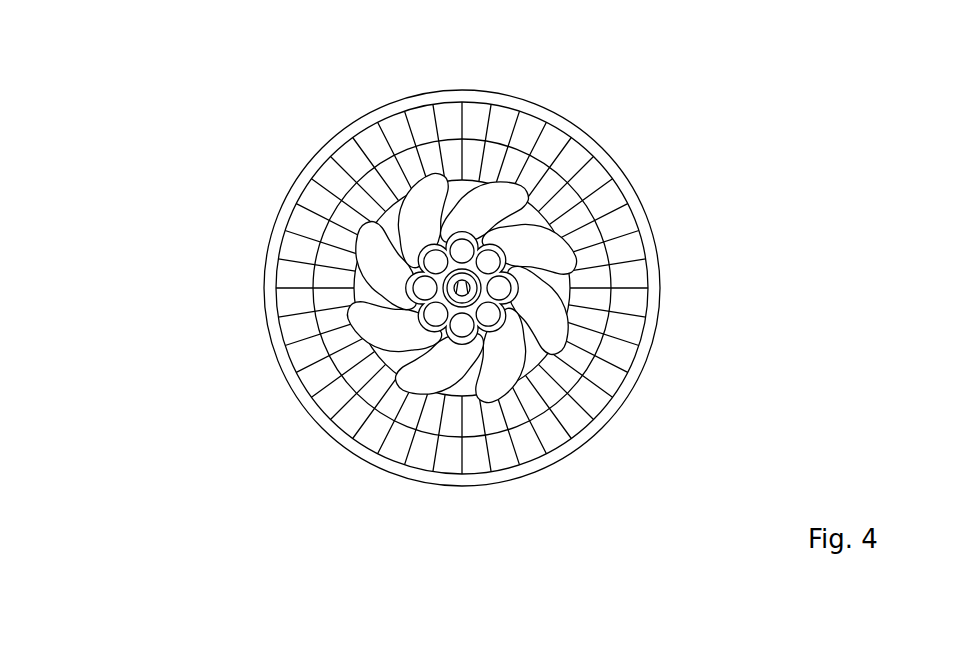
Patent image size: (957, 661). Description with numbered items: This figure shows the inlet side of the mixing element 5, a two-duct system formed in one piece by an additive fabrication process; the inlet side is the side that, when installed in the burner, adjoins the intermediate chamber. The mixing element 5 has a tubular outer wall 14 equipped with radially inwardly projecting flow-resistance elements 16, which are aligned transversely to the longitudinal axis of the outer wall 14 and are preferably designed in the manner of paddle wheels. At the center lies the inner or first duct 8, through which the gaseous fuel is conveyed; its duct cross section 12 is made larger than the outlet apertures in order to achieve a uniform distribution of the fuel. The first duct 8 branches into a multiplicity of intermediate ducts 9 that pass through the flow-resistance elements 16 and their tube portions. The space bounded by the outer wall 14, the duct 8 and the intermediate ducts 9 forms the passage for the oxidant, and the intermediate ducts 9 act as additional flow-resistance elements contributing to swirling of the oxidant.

The mixing element 5 is at (122, 92).
The tubular outer wall 14 is at (327, 151).
The duct cross section 12 is at (427, 288).
The flow-resistance elements 16 is at (322, 266).
The first duct 8 is at (315, 376).
The intermediate ducts 9 is at (415, 376).